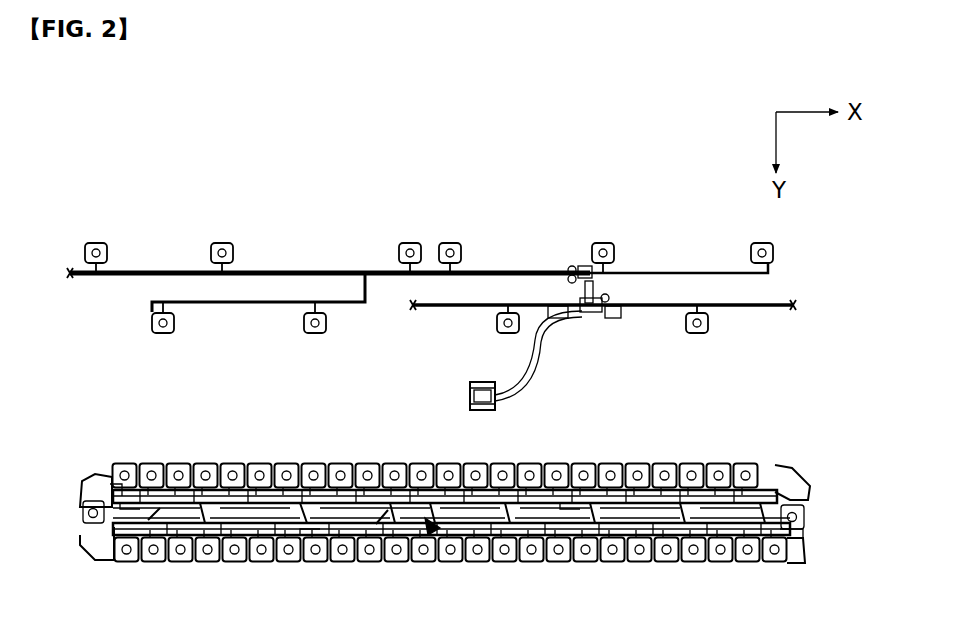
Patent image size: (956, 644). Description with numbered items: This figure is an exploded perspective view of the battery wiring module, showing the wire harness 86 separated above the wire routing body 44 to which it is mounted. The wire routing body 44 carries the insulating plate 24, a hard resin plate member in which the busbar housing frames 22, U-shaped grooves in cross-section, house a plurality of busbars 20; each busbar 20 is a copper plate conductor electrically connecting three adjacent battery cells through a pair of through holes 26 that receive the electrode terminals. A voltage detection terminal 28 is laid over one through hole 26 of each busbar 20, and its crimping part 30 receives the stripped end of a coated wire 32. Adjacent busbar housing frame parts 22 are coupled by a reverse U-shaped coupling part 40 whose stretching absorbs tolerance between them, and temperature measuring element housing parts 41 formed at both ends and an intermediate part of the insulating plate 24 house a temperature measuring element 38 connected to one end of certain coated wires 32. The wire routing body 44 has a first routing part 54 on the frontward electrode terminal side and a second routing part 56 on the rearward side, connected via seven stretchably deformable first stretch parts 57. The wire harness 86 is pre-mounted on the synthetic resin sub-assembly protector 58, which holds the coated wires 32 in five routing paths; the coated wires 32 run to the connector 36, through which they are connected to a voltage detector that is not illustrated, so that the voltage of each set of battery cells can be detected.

The busbar 20 is at (134, 463).
The busbar housing frame 22 is at (188, 480).
The insulating plate 24 is at (367, 452).
The through hole 26 is at (232, 466).
The voltage detection terminal 28 is at (104, 243).
The crimping part 30 is at (108, 271).
The coated wire 32 is at (292, 273).
The connector 36 is at (462, 391).
The temperature measuring element 38 is at (68, 274).
The coupling part 40 is at (700, 468).
The temperature measuring element housing part 41 is at (118, 478).
The wire routing body 44 is at (872, 462).
The first routing part 54 is at (812, 539).
The second routing part 56 is at (808, 477).
The first stretch part 57 is at (160, 512).
The sub-assembly protector 58 is at (586, 264).
The wire harness 86 is at (478, 202).